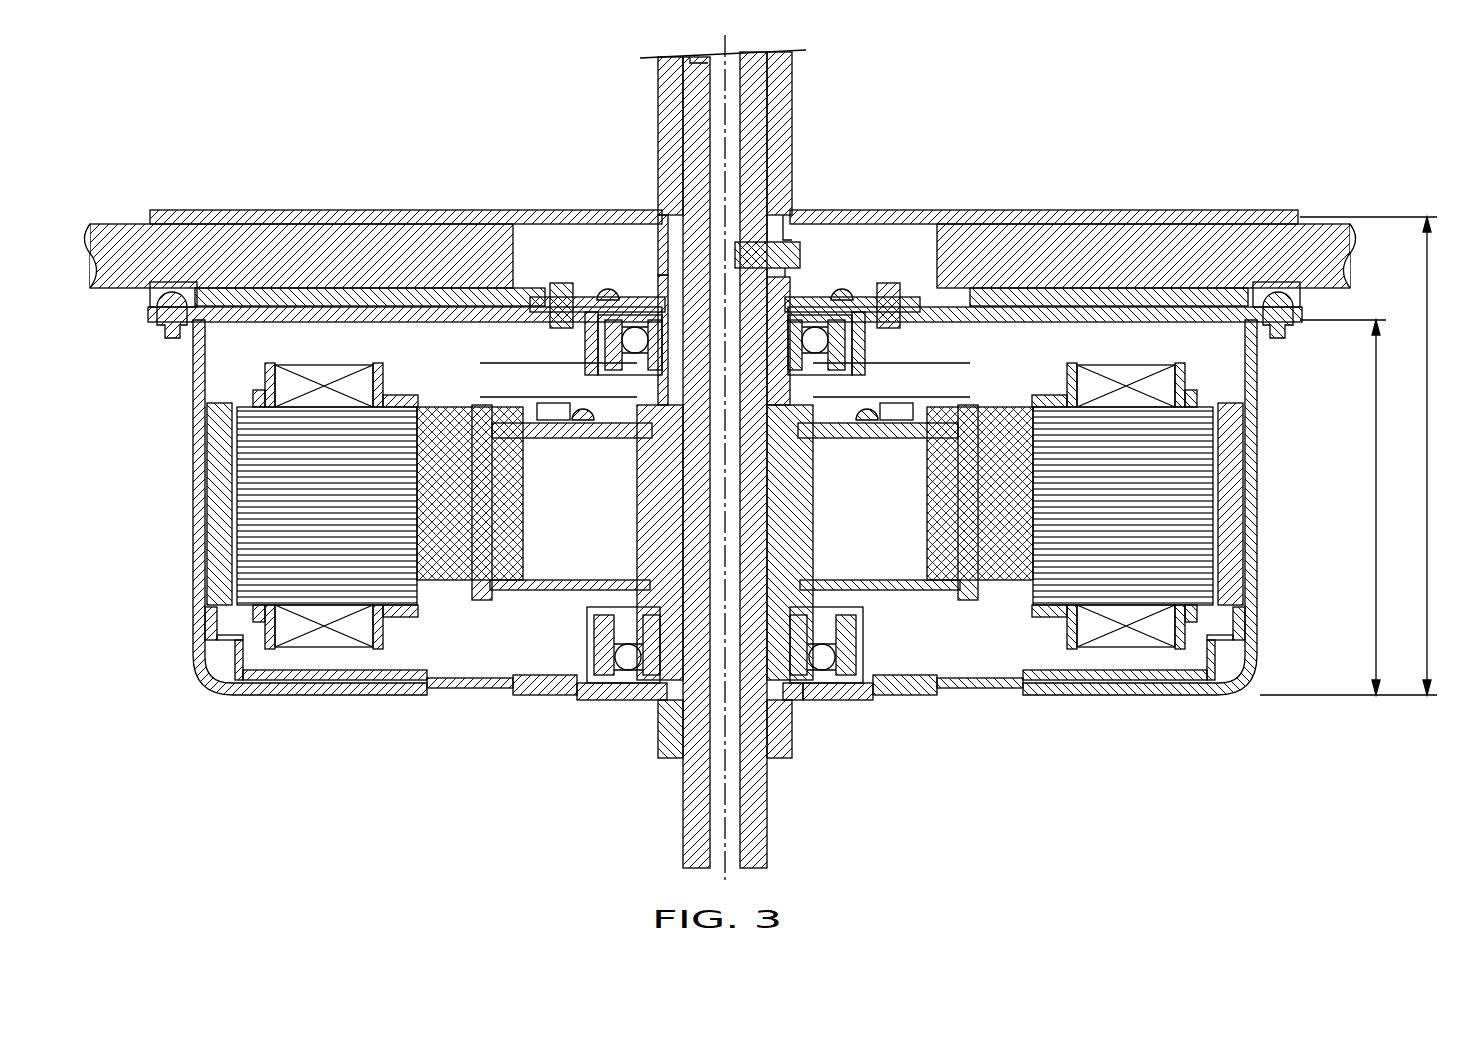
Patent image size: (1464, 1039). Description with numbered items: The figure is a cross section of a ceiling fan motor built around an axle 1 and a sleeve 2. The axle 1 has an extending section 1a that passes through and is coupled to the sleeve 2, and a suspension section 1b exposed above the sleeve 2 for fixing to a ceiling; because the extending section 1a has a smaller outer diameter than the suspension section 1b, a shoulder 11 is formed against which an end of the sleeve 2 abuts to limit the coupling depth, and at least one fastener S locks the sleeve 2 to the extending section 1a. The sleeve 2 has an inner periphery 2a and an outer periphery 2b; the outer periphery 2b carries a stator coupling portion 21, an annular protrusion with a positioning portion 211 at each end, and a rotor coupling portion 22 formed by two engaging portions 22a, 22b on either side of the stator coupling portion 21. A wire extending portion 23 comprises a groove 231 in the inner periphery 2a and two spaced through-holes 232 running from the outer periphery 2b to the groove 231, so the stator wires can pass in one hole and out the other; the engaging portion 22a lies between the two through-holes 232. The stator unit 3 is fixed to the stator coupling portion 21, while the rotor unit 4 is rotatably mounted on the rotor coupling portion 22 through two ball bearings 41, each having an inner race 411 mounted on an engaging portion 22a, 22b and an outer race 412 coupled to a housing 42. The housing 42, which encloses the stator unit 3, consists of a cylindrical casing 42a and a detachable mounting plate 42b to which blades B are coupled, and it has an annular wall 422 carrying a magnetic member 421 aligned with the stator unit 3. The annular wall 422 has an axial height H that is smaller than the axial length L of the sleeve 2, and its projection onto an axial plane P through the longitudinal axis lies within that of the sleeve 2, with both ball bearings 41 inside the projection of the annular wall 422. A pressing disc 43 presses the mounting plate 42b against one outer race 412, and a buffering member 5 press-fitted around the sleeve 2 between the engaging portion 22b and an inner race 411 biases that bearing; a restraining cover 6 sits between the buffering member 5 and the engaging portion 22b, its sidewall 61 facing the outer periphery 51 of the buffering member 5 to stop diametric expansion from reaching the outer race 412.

The axle 1 is at (696, 459).
The extending section 1a is at (655, 217).
The suspension section 1b is at (670, 157).
The shoulder 11 is at (770, 240).
The sleeve 2 is at (763, 570).
The inner periphery 2a is at (797, 703).
The outer periphery 2b is at (847, 702).
The stator coupling portion 21 is at (520, 592).
The positioning portion 211 is at (383, 690).
The rotor coupling portion 22 is at (725, 706).
The engaging portion 22a is at (1047, 690).
The engaging portion 22b is at (847, 700).
The wire extending portion 23 is at (506, 236).
The groove 231 is at (662, 243).
The through-hole 232 is at (665, 288).
The stator unit 3 is at (760, 436).
The rotor unit 4 is at (753, 479).
The ball bearing 41 is at (765, 479).
The inner race 411 is at (888, 300).
The outer race 412 is at (945, 300).
The housing 42 is at (753, 401).
The casing 42a is at (1273, 300).
The mounting plate 42b is at (1137, 310).
The magnetic member 421 is at (1225, 482).
The annular wall 422 is at (1258, 457).
The pressing disc 43 is at (1020, 217).
The buffering member 5 is at (667, 760).
The outer periphery 51 is at (640, 690).
The restraining cover 6 is at (527, 690).
The sidewall 61 is at (590, 683).
The blades B is at (1323, 228).
The fastener S is at (822, 290).
The axial plane P is at (727, 98).
The axial length L is at (1353, 456).
The axial height H is at (1350, 507).